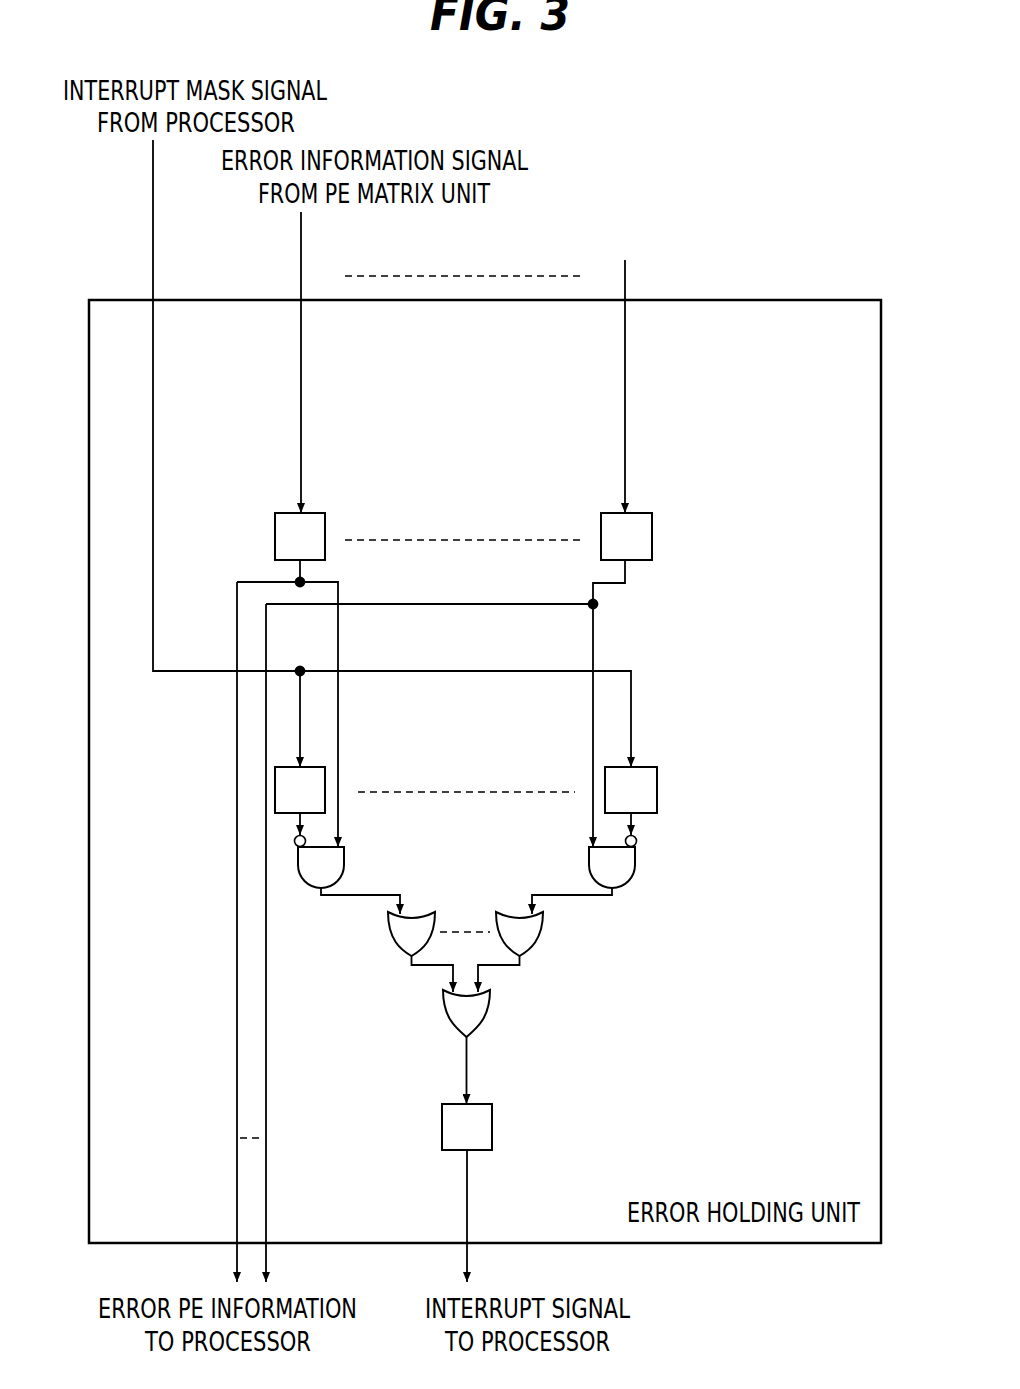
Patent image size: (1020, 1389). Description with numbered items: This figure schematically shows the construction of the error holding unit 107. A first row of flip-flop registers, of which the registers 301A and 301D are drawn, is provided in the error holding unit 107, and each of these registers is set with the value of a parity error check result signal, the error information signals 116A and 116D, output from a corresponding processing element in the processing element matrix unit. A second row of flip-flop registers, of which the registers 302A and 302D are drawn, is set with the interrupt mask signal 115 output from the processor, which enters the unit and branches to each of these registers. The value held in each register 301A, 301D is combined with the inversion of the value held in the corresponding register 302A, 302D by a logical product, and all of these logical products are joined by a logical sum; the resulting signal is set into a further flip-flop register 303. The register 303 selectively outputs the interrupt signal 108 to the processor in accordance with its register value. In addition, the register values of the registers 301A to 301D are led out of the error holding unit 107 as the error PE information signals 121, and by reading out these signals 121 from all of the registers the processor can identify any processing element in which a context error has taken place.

The error holding unit 107 is at (757, 300).
The interrupt mask signal 115 is at (153, 288).
The parity error check result signal 116A is at (301, 277).
The parity error check result signal 116D is at (625, 277).
The register 301A is at (325, 520).
The register 301D is at (652, 523).
The register 302A is at (325, 787).
The register 302D is at (657, 790).
The register 303 is at (492, 1127).
The error PE information signal 121 is at (265, 1234).
The interrupt signal 108 is at (467, 1232).